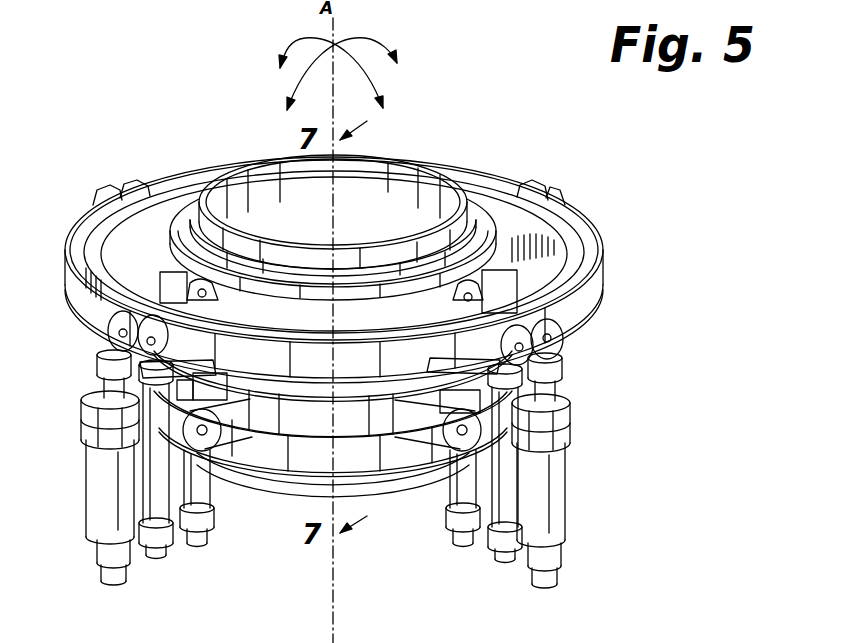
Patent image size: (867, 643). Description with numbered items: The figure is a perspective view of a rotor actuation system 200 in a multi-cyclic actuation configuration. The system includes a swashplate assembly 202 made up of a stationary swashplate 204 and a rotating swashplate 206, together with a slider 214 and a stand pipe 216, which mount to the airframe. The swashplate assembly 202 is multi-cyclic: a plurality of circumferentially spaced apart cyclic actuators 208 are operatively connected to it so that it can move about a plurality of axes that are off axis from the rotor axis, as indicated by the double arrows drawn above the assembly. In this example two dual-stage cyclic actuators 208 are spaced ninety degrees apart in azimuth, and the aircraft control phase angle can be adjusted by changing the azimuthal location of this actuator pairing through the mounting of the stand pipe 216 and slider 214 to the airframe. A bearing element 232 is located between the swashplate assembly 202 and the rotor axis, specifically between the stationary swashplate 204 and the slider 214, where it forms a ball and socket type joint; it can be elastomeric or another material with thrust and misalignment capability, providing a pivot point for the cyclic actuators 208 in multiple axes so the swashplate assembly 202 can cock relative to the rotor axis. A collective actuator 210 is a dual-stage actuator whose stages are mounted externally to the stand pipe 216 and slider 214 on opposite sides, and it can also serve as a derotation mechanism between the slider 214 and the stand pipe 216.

The rotor actuation system 200 is at (148, 104).
The swashplate assembly 202 is at (600, 238).
The stationary swashplate 204 is at (508, 220).
The rotating swashplate 206 is at (596, 303).
The cyclic actuators 208 is at (160, 505).
The collective actuator 210 is at (92, 503).
The slider 214 is at (293, 415).
The stand pipe 216 is at (407, 478).
The bearing element 232 is at (172, 240).